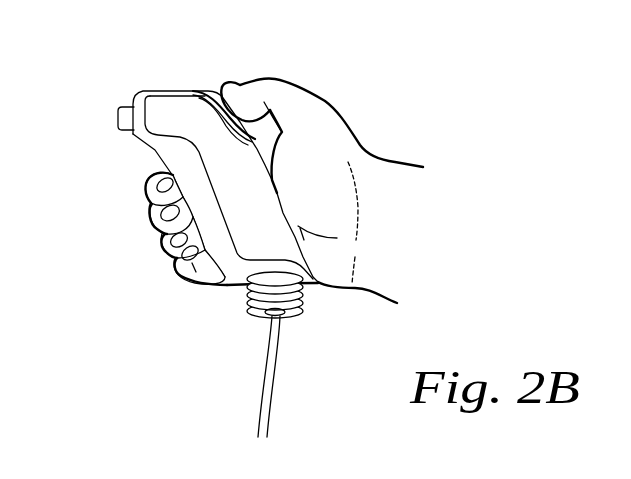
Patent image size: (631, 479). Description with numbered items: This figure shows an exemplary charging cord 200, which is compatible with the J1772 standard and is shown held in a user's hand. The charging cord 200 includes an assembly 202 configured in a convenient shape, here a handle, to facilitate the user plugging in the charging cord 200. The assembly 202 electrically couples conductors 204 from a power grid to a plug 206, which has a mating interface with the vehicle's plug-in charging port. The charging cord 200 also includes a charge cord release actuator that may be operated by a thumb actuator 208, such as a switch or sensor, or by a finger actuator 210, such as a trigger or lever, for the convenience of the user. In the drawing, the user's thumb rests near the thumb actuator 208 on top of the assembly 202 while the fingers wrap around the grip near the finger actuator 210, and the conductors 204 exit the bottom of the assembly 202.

The charging cord 200 is at (172, 231).
The assembly 202 is at (232, 263).
The conductors 204 is at (267, 363).
The plug 206 is at (119, 111).
The thumb actuator 208 is at (212, 92).
The finger actuator 210 is at (150, 175).